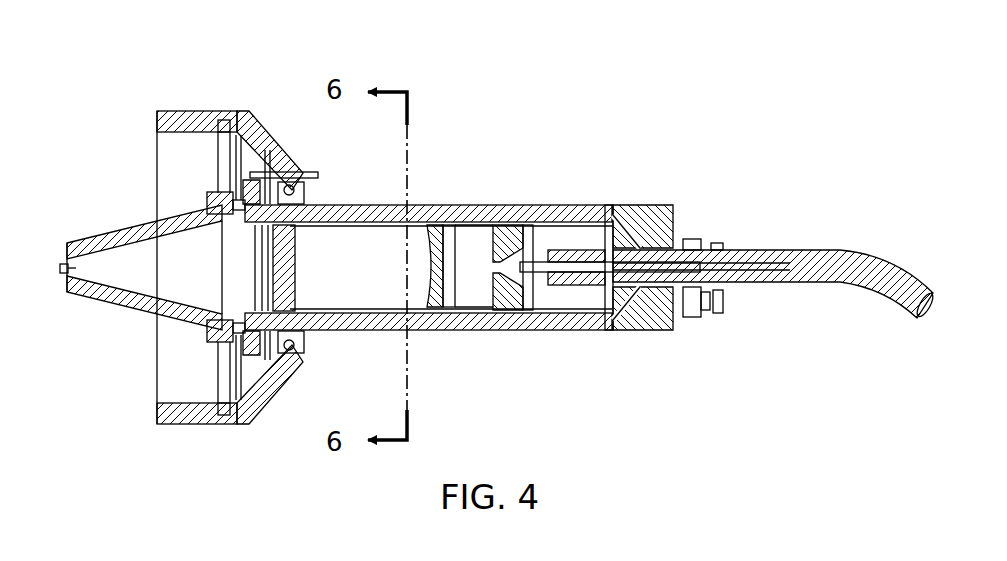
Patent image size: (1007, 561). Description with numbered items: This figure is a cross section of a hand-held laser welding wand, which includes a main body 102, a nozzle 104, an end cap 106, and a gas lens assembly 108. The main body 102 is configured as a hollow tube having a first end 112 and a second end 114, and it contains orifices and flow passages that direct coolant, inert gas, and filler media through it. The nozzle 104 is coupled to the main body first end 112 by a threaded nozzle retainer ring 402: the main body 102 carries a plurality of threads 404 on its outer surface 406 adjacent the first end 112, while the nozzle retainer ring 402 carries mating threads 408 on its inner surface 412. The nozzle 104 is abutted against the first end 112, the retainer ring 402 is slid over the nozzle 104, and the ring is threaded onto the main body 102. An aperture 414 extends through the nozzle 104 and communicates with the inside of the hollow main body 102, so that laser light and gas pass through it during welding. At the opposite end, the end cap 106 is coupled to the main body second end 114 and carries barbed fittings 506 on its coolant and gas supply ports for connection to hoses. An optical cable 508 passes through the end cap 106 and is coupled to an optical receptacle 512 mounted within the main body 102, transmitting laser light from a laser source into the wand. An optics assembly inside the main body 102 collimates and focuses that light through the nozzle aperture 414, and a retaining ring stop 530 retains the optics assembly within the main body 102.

The main body 102 is at (520, 206).
The nozzle 104 is at (108, 232).
The end cap 106 is at (647, 203).
The gas lens assembly 108 is at (181, 97).
The first end 112 is at (232, 202).
The second end 114 is at (609, 203).
The nozzle retainer ring 402 is at (210, 193).
The threads 404 is at (278, 353).
The outer surface 406 is at (377, 203).
The threads 408 is at (230, 338).
The inner surface 412 is at (242, 203).
The aperture 414 is at (63, 277).
The barbed fitting 506 is at (694, 239).
The optical cable 508 is at (828, 252).
The optical receptacle 512 is at (530, 286).
The retaining ring stop 530 is at (250, 304).